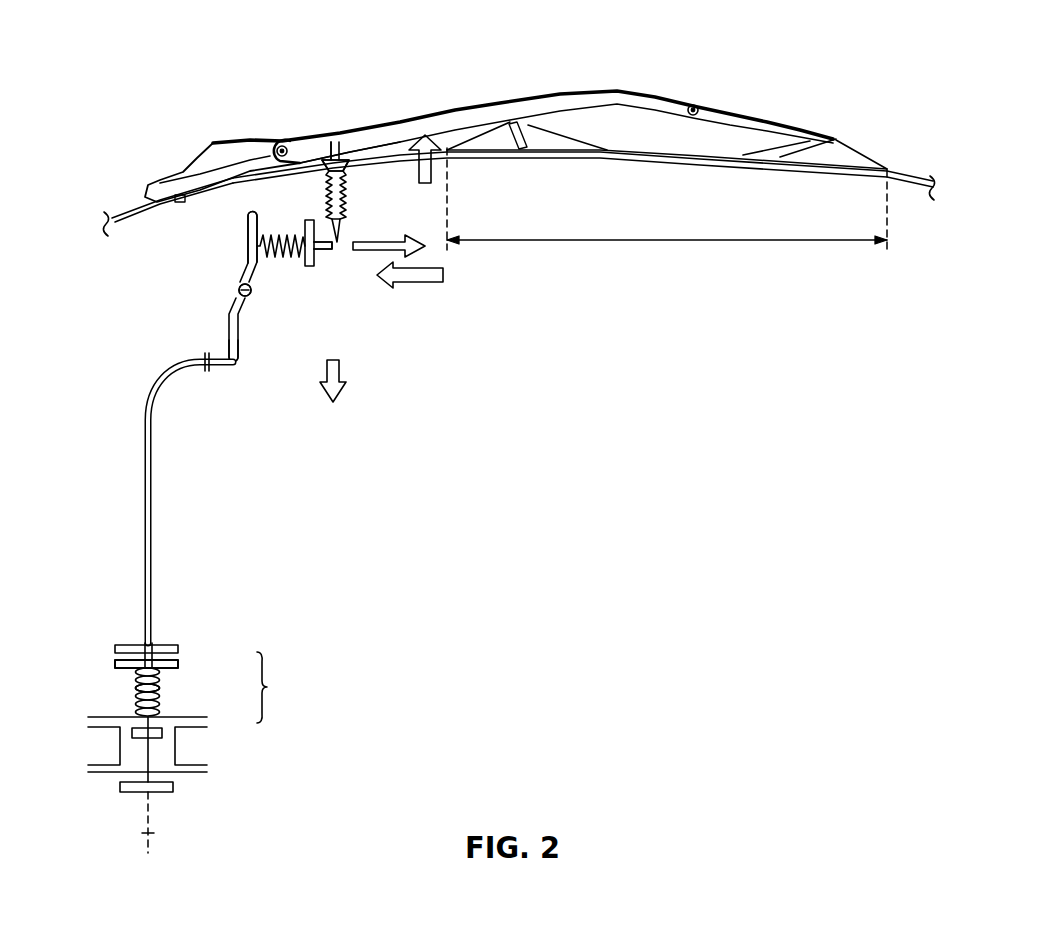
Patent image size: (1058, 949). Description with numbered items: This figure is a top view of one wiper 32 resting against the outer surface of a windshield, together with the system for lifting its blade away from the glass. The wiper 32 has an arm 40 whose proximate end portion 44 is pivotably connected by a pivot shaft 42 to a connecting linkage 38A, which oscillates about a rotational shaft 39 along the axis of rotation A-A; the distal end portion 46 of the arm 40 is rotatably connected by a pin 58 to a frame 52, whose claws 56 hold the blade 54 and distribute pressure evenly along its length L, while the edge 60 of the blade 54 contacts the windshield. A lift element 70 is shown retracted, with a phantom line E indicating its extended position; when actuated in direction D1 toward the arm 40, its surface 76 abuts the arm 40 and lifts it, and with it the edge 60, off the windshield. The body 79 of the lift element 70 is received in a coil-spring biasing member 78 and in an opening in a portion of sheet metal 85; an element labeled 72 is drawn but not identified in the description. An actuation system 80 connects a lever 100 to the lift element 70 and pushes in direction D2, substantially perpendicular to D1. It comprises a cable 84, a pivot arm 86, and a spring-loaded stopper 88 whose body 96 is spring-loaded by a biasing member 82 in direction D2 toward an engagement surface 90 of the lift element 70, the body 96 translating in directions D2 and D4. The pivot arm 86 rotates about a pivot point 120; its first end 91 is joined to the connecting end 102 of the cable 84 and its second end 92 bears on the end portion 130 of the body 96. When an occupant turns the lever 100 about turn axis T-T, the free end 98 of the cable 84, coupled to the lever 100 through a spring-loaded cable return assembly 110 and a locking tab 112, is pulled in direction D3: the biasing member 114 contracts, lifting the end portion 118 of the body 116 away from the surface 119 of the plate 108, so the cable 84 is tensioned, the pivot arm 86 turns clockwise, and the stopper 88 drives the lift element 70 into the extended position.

The wiper 32 is at (850, 44).
The connecting linkage 38A is at (213, 160).
The rotational shaft 39 is at (152, 196).
The arm 40 is at (368, 148).
The pivot shaft 42 is at (277, 143).
The proximate end portion 44 is at (318, 135).
The distal end portion 46 is at (656, 95).
The frame 52 is at (738, 108).
The blade 54 is at (706, 158).
The claws 56 is at (738, 132).
The pin 58 is at (697, 105).
The edge 60 is at (822, 176).
The lift element 70 is at (355, 199).
The inner skin surface 72 is at (383, 148).
The surface 76 is at (337, 152).
The biasing member 78 is at (455, 112).
The body 79 is at (341, 150).
The actuation system 80 is at (338, 289).
The biasing member 82 is at (273, 231).
The cable 84 is at (153, 467).
The sheet metal 85 is at (908, 176).
The pivot arm 86 is at (245, 306).
The spring-loaded stopper 88 is at (289, 268).
The engagement surface 90 is at (344, 240).
The first end 91 is at (240, 362).
The second end 92 is at (247, 233).
The body 96 is at (291, 233).
The free end 98 is at (153, 642).
The lever 100 is at (160, 794).
The connecting end 102 is at (212, 371).
The plate 108 is at (110, 679).
The spring-loaded cable return assembly 110 is at (287, 687).
The locking tab 112 is at (195, 737).
The biasing member 114 is at (143, 676).
The body 116 is at (157, 697).
The end portion 118 is at (177, 671).
The surface 119 is at (130, 668).
The pivot point 120 is at (238, 292).
The end portion 130 is at (251, 291).
The axis of rotation A- A is at (150, 178).
The extended position E is at (330, 158).
The length L is at (667, 211).
The turn axis T- T is at (142, 810).
The direction D1 is at (434, 166).
The direction D2 is at (430, 242).
The direction D3 is at (342, 372).
The direction D4 is at (445, 277).